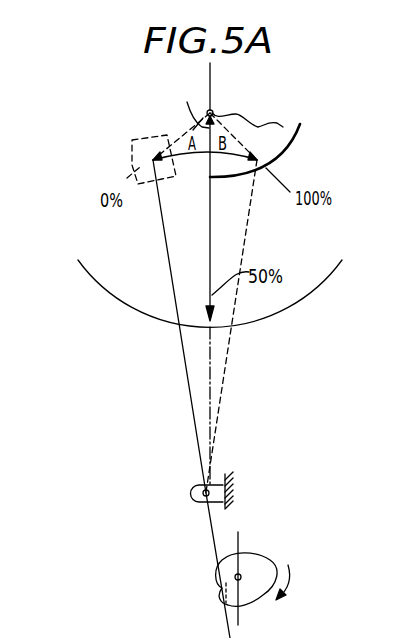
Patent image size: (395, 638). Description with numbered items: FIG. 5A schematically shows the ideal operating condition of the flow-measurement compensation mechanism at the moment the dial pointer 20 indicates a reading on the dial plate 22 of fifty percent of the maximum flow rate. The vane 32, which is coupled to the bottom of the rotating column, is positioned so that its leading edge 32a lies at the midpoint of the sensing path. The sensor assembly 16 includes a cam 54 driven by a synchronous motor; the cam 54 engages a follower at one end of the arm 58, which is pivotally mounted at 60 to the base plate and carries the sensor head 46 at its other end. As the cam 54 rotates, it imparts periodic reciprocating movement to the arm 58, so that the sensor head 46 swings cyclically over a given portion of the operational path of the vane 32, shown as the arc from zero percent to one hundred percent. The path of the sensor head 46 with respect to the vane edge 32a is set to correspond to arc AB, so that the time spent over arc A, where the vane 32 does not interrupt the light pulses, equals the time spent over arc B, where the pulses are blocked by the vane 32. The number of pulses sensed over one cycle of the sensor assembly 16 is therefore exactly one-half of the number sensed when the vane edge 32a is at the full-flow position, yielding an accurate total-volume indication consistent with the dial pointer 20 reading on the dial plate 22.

The sensor assembly 16 is at (178, 372).
The dial pointer 20 is at (208, 236).
The dial plate 22 is at (283, 313).
The vane 32 is at (274, 132).
The leading edge 32a is at (179, 104).
The sensor head 46 is at (131, 158).
The cam 54 is at (258, 563).
The arm 58 is at (212, 549).
The pivot 60 is at (213, 483).